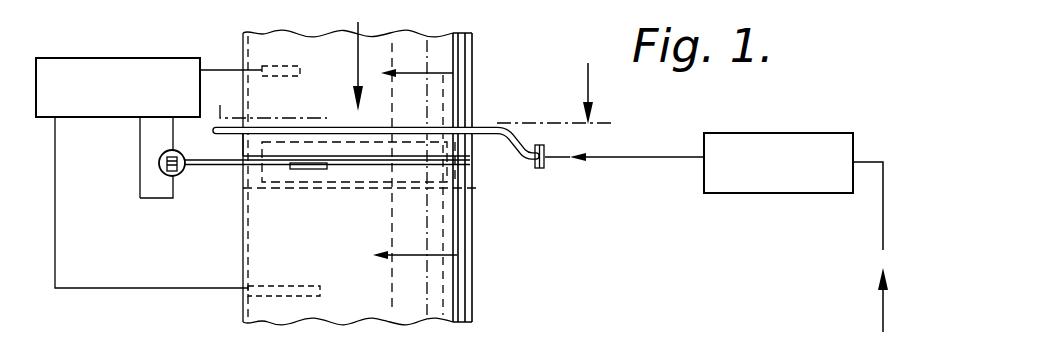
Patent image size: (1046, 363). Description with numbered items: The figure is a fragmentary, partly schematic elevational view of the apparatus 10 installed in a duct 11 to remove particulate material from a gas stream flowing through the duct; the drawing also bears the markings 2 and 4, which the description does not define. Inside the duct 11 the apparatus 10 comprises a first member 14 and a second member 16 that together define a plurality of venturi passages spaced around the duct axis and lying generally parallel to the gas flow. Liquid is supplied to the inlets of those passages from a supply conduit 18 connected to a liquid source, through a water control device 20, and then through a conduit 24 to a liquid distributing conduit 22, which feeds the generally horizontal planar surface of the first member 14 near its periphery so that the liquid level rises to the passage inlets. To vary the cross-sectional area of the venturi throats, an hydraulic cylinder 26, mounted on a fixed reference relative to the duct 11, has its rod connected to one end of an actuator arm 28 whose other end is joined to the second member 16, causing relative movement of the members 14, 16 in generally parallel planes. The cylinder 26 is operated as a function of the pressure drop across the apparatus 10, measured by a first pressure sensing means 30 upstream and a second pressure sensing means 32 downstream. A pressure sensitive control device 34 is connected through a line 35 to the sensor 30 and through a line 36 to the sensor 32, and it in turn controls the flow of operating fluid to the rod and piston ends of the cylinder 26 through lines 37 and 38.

The air flow direction 2 is at (405, 154).
The section line 4 is at (414, 93).
The apparatus 10 is at (311, 173).
The duct 11 is at (473, 71).
The first member 14 is at (345, 135).
The second member 16 is at (370, 190).
The supply conduit 18 is at (883, 235).
The water control device 20 is at (738, 193).
The liquid distributing conduit 22 is at (481, 122).
The conduit 24 is at (621, 159).
The hydraulic cylinder 26 is at (180, 178).
The actuator arm 28 is at (213, 168).
The first pressure sensing means 30 is at (280, 66).
The second pressure sensing means 32 is at (306, 286).
The pressure sensitive control device 34 is at (130, 58).
The line 35 is at (222, 70).
The line 36 is at (56, 290).
The line 37 is at (140, 158).
The line 38 is at (179, 125).